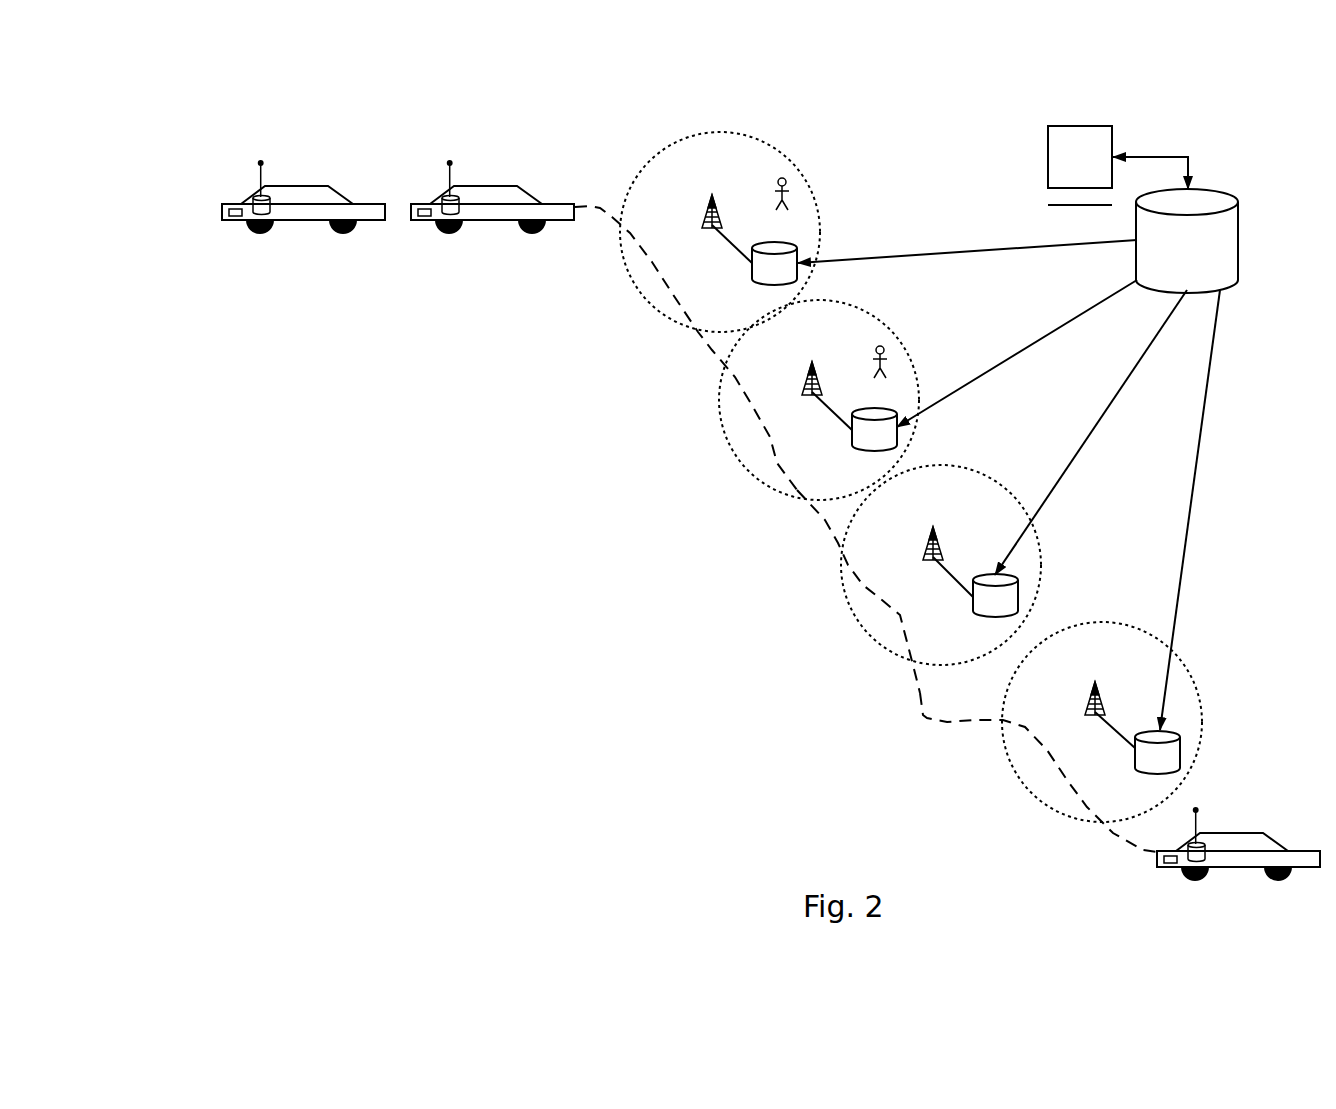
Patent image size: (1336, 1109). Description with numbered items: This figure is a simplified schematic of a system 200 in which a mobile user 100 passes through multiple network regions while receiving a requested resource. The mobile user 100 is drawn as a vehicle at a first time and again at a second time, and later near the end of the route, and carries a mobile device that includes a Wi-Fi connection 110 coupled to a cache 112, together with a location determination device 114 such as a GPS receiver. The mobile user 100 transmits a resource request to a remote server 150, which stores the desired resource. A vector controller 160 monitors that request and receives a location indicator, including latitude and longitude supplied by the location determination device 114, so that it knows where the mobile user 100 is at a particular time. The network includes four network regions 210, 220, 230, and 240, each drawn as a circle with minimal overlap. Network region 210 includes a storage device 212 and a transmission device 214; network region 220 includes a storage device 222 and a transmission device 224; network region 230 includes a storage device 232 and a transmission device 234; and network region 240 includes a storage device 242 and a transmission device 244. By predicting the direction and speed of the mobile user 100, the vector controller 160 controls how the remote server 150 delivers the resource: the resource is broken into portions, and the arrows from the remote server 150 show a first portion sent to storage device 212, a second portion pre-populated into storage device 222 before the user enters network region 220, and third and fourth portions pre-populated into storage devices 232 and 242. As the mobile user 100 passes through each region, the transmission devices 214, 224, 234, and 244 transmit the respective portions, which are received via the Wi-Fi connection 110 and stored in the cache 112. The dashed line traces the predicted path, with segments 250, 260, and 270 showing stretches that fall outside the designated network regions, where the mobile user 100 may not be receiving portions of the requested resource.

The mobile user 100 is at (330, 186).
The Wi-Fi connection 110 is at (258, 167).
The cache 112 is at (275, 203).
The location determination device 114 is at (233, 218).
The remote server 150 is at (1238, 240).
The vector controller 160 is at (1047, 162).
The system 200 is at (620, 604).
The network region 210 is at (720, 232).
The storage device 212 is at (774, 263).
The transmission device 214 is at (718, 202).
The network region 220 is at (819, 400).
The storage device 222 is at (874, 429).
The transmission device 224 is at (816, 369).
The network region 230 is at (941, 565).
The storage device 232 is at (995, 595).
The transmission device 234 is at (938, 534).
The network region 240 is at (1102, 722).
The storage device 242 is at (1157, 752).
The transmission device 244 is at (1100, 689).
The predicted path portion 250 is at (772, 458).
The predicted path portion 260 is at (893, 606).
The predicted path portion 270 is at (922, 710).